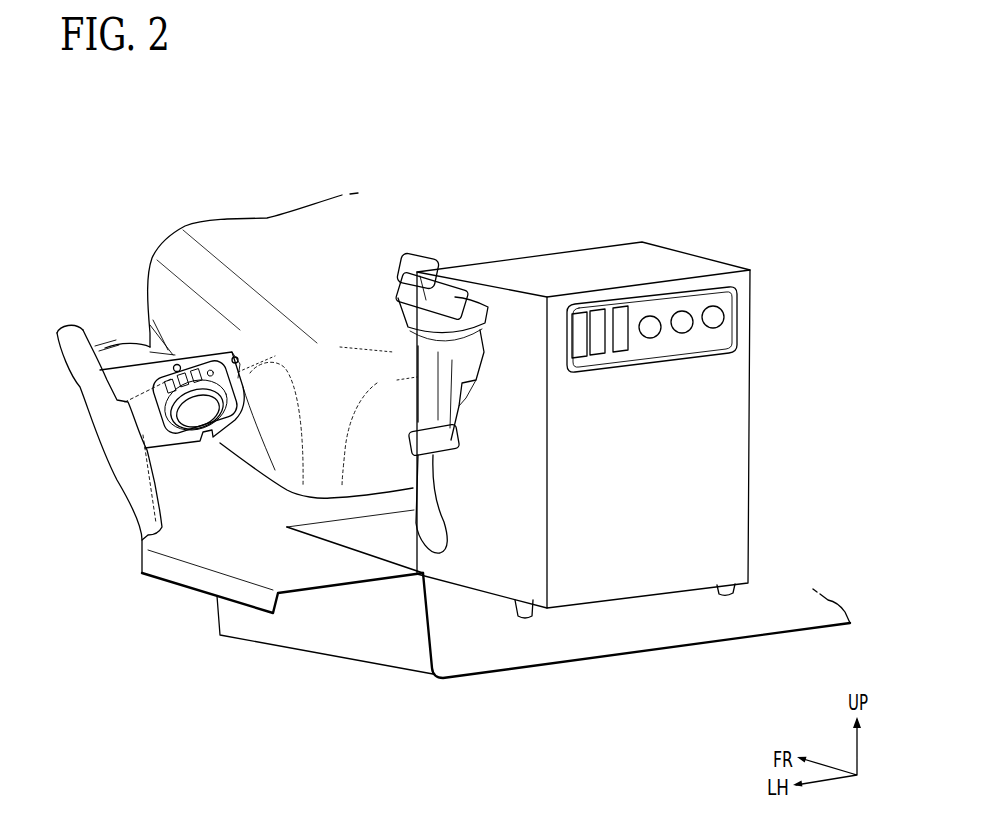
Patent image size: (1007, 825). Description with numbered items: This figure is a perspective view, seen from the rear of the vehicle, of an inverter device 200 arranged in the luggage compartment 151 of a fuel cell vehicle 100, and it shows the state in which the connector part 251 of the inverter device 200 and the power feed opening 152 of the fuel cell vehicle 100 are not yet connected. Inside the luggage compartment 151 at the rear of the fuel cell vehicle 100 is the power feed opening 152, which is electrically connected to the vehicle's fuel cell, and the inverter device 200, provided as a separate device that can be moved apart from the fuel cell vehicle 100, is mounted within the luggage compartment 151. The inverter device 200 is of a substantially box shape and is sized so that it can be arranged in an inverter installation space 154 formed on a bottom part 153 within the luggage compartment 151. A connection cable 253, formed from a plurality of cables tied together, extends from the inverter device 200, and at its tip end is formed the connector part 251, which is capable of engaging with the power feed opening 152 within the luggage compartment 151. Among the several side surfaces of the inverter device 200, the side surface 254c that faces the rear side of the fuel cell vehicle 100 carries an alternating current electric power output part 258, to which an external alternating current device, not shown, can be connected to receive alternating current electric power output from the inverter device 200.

The fuel cell vehicle 100 is at (126, 210).
The luggage compartment 151 is at (247, 237).
The power feed opening 152 is at (215, 437).
The bottom part 153 is at (450, 652).
The inverter installation space 154 is at (384, 585).
The inverter device 200 is at (637, 358).
The connector part 251 is at (404, 243).
The connection cable 253 is at (415, 516).
The alternating current electric power output part 258 is at (712, 335).
The side surface 254c is at (697, 337).